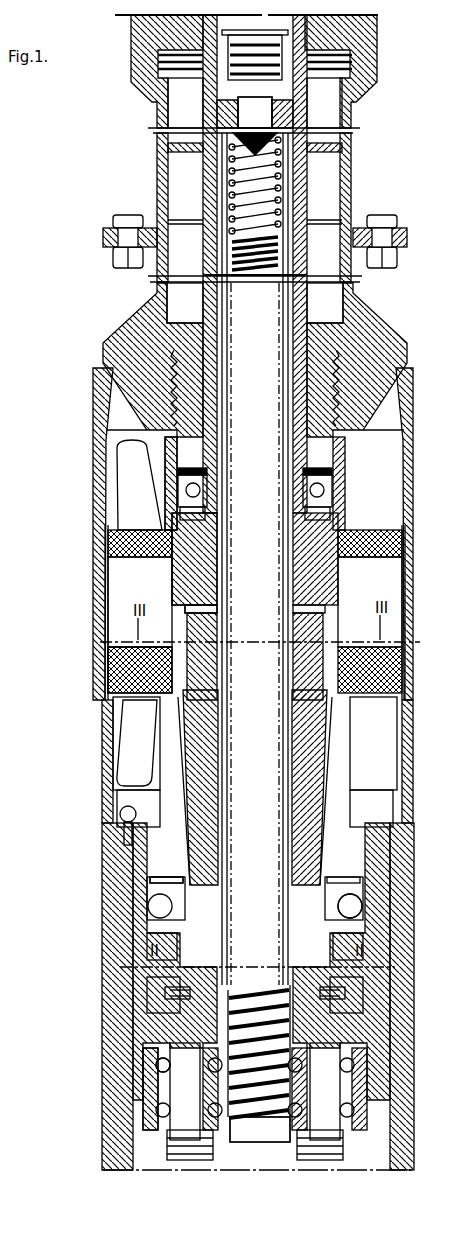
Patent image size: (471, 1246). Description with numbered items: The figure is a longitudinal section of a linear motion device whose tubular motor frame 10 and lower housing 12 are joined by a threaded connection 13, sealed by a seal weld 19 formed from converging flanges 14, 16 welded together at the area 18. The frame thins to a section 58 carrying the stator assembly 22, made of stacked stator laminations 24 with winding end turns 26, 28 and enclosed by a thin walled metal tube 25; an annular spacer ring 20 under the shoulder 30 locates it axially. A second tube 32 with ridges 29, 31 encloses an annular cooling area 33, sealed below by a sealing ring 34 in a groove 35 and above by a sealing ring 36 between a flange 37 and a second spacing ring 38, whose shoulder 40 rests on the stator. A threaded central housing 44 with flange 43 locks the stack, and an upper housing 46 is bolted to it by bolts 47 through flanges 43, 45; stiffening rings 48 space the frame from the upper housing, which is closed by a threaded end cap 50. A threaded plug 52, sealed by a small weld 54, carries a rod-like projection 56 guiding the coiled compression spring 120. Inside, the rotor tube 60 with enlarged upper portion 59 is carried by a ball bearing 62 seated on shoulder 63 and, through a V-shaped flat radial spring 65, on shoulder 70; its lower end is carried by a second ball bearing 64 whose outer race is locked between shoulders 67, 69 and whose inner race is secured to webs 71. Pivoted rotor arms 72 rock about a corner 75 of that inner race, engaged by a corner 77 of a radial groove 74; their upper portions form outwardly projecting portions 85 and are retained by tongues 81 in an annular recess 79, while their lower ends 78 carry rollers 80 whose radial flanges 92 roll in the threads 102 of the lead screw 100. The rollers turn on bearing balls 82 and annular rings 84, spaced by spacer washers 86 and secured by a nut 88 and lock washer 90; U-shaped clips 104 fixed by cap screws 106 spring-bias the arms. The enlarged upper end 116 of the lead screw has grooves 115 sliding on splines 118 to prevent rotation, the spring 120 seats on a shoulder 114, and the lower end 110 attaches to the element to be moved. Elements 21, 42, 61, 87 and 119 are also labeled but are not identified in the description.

The tubular motor frame 10 is at (203, 104).
The lower housing 12 is at (105, 942).
The threaded connection 13 is at (380, 860).
The curved converging flange 14 is at (378, 812).
The curved converging flange 16 is at (400, 800).
The weld area 18 is at (378, 800).
The seal weld 19 is at (395, 812).
The annular spacer ring 20 is at (108, 750).
The pin 21 is at (118, 820).
The stator assembly 22 is at (405, 622).
The stacked stator laminations 24 is at (108, 650).
The thin walled metal tube 25 is at (100, 600).
The end turns 26 is at (405, 490).
The end turns 28 is at (120, 720).
The inwardly projecting ridge 29 is at (403, 553).
The shoulder 30 is at (405, 706).
The inwardly projecting ridge 31 is at (412, 700).
The second tube 32 is at (100, 568).
The annular area 33 is at (410, 598).
The sealing ring 34 is at (405, 688).
The groove 35 is at (405, 665).
The sealing ring 36 is at (405, 530).
The flange 37 is at (403, 540).
The second spacing ring 38 is at (99, 392).
The shoulder 40 is at (385, 527).
The ring 42 is at (96, 523).
The flange 43 is at (398, 245).
The central housing 44 is at (378, 320).
The flange 45 is at (398, 232).
The upper housing 46 is at (349, 178).
The bolts 47 is at (385, 224).
The stiffening rings 48 is at (350, 60).
The threaded end cap 50 is at (353, 27).
The threaded plug 52 is at (300, 30).
The small weld 54 is at (200, 44).
The rod-like projection 56 is at (257, 112).
The thinned walled section 58 is at (343, 584).
The enlarged upper portion 59 is at (343, 570).
The rotor tube 60 is at (222, 685).
The rod 61 is at (222, 592).
The ball bearing 62 is at (160, 490).
The shoulder 63 is at (188, 520).
The second ball bearing 64 is at (400, 891).
The V-shaped flat radial spring 65 is at (228, 452).
The shoulder 67 is at (400, 906).
The shoulder 69 is at (400, 860).
The shoulder 70 is at (184, 468).
The webs 71 is at (217, 896).
The rotor arms 72 is at (205, 826).
The channel shaped radial groove 74 is at (350, 906).
The corner 75 is at (400, 876).
The corner 77 is at (185, 890).
The lower ends 78 is at (345, 1052).
The annular recess 79 is at (340, 610).
The rollers 80 is at (143, 1078).
The projecting tongue 81 is at (346, 627).
The bearing balls 82 is at (385, 1120).
The annular rings 84 is at (352, 1062).
The outwardly projecting portions 85 is at (162, 718).
The spacer washers 86 is at (340, 1043).
The nut 87 is at (185, 565).
The nut 88 is at (345, 1165).
The lock washer 90 is at (350, 1147).
The radial flanges 92 is at (143, 1062).
The lead screw 100 is at (290, 982).
The threads 102 is at (285, 1032).
The U-shaped clips 104 is at (370, 982).
The cap screws 106 is at (380, 997).
The lower end 110 is at (268, 1142).
The shoulder 114 is at (285, 232).
The longitudinal grooves 115 is at (298, 98).
The enlarged upper end 116 is at (292, 122).
The splines 118 is at (215, 124).
The ring 119 is at (290, 461).
The coiled compression spring 120 is at (295, 108).